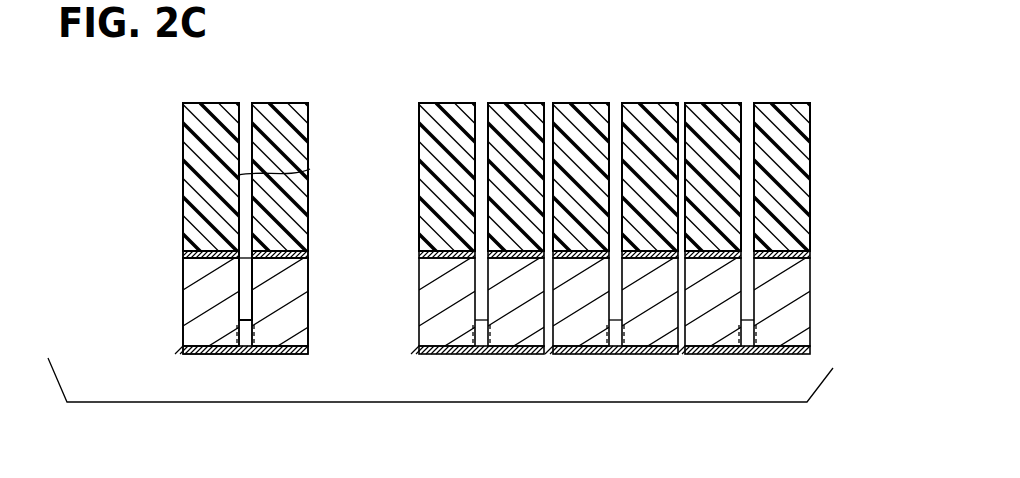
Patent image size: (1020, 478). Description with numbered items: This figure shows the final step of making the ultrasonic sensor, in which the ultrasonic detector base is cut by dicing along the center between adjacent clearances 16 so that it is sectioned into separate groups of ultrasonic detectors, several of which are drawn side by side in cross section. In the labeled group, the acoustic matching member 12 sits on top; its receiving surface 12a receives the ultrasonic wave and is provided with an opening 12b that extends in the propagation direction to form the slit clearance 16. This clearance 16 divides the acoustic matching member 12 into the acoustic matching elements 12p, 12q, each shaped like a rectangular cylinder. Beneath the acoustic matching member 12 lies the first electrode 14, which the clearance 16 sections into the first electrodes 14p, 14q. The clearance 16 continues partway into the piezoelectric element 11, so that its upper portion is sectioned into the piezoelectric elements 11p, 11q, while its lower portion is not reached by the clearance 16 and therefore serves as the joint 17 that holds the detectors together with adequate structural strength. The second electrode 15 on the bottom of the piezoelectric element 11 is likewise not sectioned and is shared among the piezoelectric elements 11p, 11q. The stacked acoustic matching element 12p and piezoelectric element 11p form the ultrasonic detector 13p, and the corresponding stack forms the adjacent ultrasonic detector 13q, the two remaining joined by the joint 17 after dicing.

The piezoelectric element 11 is at (220, 313).
The piezoelectric element 11p is at (192, 263).
The piezoelectric element 11q is at (298, 266).
The acoustic matching member 12 is at (181, 160).
The receiving surface 12a is at (210, 103).
The opening 12b is at (243, 117).
The acoustic matching element 12p is at (183, 213).
The acoustic matching element 12q is at (300, 213).
The ultrasonic detector 13p is at (201, 192).
The ultrasonic detector 13q is at (270, 188).
The first electrode 14 is at (220, 295).
The first electrode 14p is at (212, 258).
The first electrode 14q is at (275, 258).
The second electrode 15 is at (210, 354).
The clearance 16 is at (289, 173).
The joint 17 is at (250, 333).